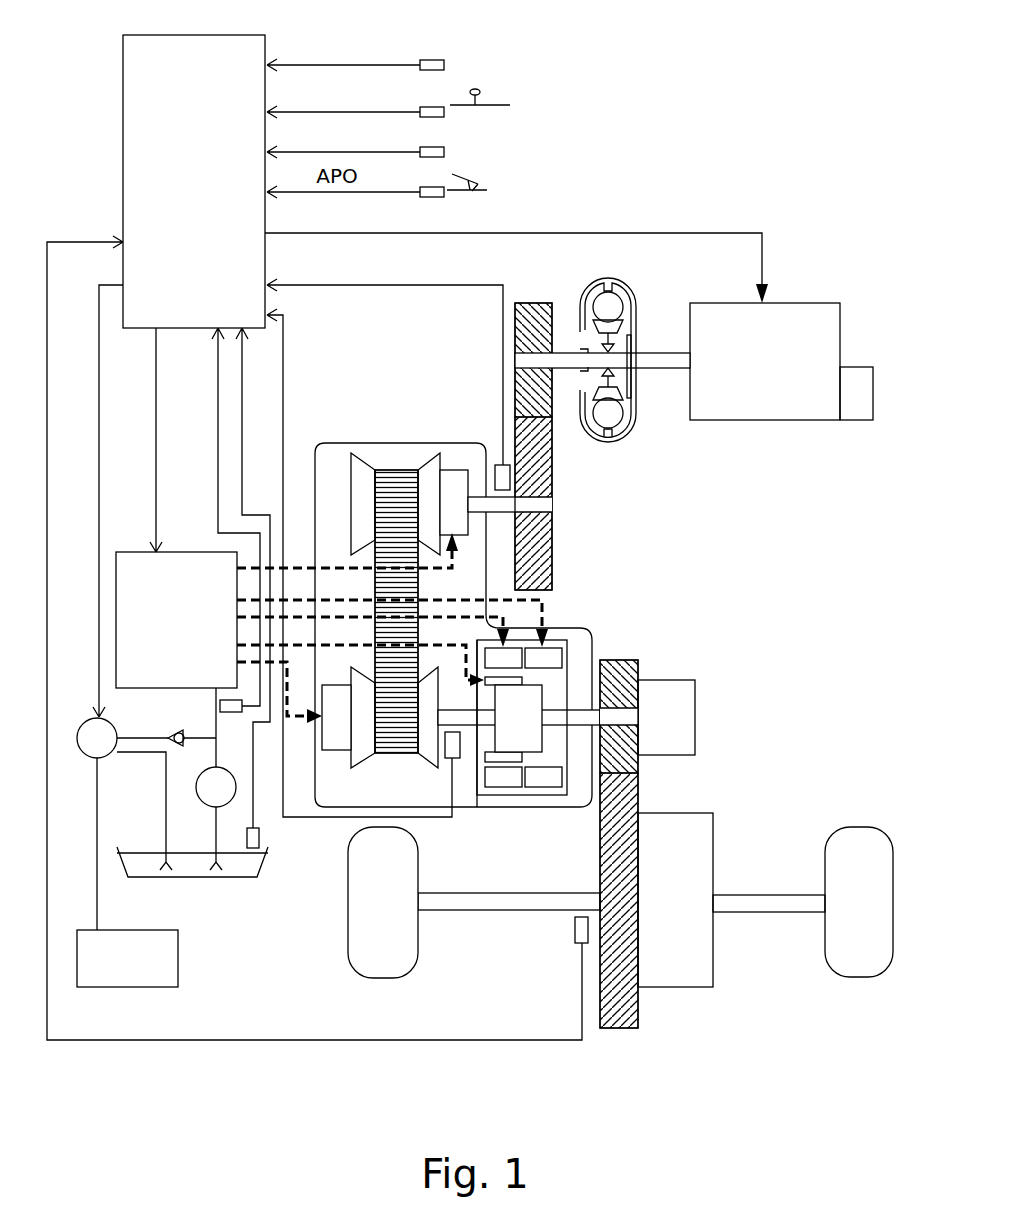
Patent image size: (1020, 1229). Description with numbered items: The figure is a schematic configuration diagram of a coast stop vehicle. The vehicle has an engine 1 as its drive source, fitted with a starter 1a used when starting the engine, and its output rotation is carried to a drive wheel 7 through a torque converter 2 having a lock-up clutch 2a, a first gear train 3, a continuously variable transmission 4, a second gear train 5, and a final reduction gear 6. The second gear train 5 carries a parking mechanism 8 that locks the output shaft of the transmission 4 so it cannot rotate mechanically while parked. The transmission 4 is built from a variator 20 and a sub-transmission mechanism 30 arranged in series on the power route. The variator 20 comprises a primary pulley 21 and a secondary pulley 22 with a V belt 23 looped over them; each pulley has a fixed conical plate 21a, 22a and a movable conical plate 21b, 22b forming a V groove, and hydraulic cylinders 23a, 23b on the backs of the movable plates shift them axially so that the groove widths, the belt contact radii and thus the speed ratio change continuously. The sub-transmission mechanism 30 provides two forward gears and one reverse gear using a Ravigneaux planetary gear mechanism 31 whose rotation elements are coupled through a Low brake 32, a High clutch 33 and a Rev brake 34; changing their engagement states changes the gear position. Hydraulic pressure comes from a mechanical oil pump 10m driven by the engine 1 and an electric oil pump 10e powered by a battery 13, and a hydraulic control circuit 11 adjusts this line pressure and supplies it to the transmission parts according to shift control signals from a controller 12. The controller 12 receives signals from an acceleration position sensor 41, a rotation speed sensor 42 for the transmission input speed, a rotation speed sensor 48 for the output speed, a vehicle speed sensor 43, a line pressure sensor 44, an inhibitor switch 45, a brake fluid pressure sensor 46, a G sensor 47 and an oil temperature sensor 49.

The engine 1 is at (810, 306).
The starter 1a is at (852, 428).
The torque converter 2 is at (625, 316).
The lock-up clutch 2a is at (638, 398).
The first gear train 3 is at (537, 292).
The continuously variable transmission 4 is at (480, 443).
The second gear train 5 is at (623, 1040).
The final reduction gear 6 is at (675, 975).
The drive wheel 7 is at (383, 963).
The parking mechanism 8 is at (678, 708).
The electric oil pump 10e is at (100, 760).
The mechanical oil pump 10m is at (207, 805).
The hydraulic control circuit 11 is at (140, 558).
The controller 12 is at (253, 46).
The battery 13 is at (160, 975).
The variator 20 is at (340, 468).
The primary pulley 21 is at (374, 459).
The fixed conical plate 21a is at (360, 470).
The movable conical plate 21b is at (428, 470).
The secondary pulley 22 is at (399, 771).
The fixed conical plate 22a is at (400, 762).
The movable conical plate 22b is at (362, 748).
The V belt 23 is at (398, 472).
The hydraulic cylinder 23a is at (450, 500).
The hydraulic cylinder 23b is at (332, 740).
The sub-transmission mechanism 30 is at (573, 690).
The Ravigneaux planetary gear mechanism 31 is at (525, 712).
The Low brake 32 is at (504, 658).
The High clutch 33 is at (505, 757).
The Rev brake 34 is at (542, 660).
The acceleration position sensor 41 is at (433, 197).
The rotation speed sensor 42 is at (500, 465).
The vehicle speed sensor 43 is at (575, 937).
The line pressure sensor 44 is at (231, 712).
The inhibitor switch 45 is at (433, 107).
The brake fluid pressure sensor 46 is at (430, 157).
The G sensor 47 is at (433, 60).
The rotation speed sensor 48 is at (453, 758).
The oil temperature sensor 49 is at (260, 838).